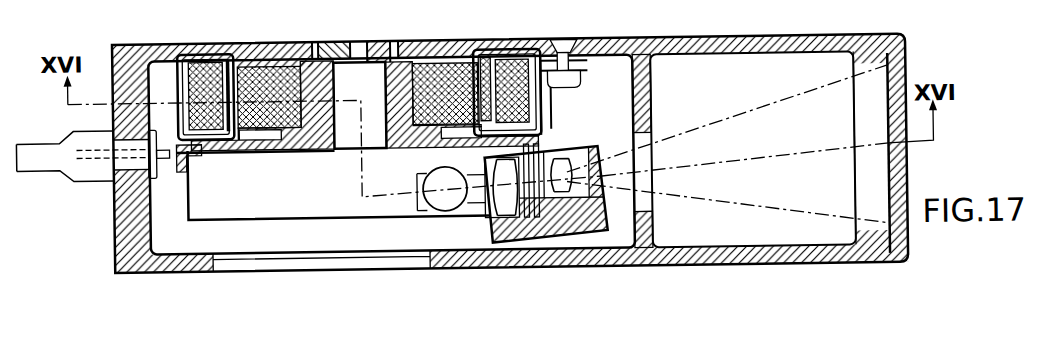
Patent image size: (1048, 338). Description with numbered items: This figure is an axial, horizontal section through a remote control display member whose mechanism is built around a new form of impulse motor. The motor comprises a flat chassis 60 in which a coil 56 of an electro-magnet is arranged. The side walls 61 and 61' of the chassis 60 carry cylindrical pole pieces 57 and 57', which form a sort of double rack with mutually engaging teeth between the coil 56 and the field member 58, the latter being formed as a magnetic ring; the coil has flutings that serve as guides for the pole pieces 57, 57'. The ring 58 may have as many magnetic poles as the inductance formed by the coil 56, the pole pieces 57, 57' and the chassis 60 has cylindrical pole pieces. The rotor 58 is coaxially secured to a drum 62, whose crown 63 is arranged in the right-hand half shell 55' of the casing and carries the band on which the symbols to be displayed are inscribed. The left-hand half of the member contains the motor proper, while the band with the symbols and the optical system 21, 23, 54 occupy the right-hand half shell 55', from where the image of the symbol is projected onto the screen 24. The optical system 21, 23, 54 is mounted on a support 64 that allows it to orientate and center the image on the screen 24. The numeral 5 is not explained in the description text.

The housing 5 is at (718, 45).
The optical system 21 is at (578, 164).
The optical system 23 is at (432, 201).
The screen 24 is at (892, 67).
The optical system 54 is at (498, 212).
The half-shell 55' is at (753, 177).
The coil 56 is at (537, 63).
The cylindrical pole piece 57 is at (244, 69).
The cylindrical pole piece 57' is at (486, 62).
The field member 58 is at (280, 84).
The flat chassis 60 is at (541, 114).
The side wall 61 is at (218, 129).
The side wall 61' is at (520, 63).
The drum 62 is at (300, 136).
The crown 63 is at (185, 203).
The support 64 is at (510, 220).